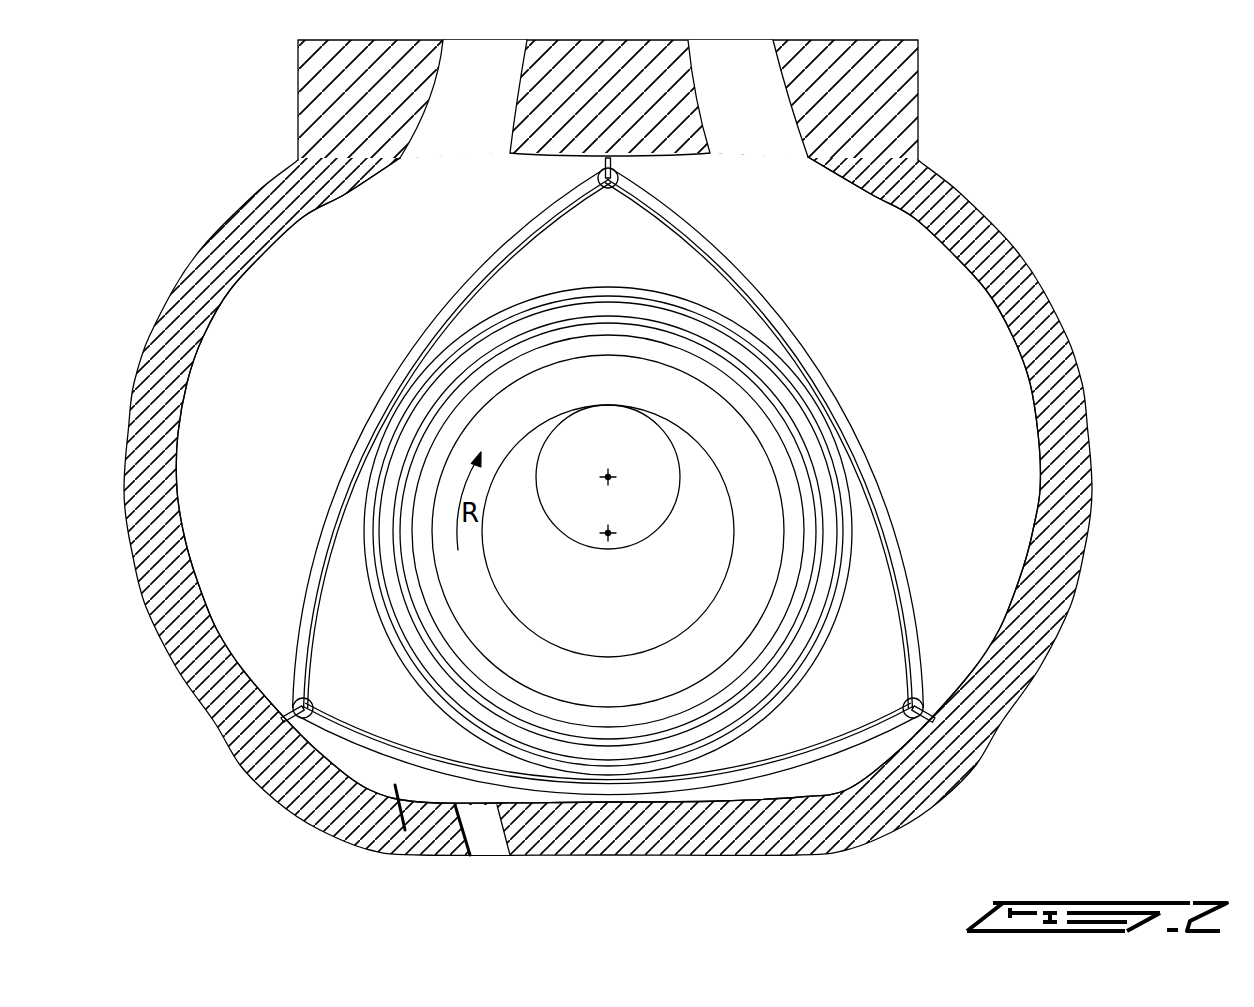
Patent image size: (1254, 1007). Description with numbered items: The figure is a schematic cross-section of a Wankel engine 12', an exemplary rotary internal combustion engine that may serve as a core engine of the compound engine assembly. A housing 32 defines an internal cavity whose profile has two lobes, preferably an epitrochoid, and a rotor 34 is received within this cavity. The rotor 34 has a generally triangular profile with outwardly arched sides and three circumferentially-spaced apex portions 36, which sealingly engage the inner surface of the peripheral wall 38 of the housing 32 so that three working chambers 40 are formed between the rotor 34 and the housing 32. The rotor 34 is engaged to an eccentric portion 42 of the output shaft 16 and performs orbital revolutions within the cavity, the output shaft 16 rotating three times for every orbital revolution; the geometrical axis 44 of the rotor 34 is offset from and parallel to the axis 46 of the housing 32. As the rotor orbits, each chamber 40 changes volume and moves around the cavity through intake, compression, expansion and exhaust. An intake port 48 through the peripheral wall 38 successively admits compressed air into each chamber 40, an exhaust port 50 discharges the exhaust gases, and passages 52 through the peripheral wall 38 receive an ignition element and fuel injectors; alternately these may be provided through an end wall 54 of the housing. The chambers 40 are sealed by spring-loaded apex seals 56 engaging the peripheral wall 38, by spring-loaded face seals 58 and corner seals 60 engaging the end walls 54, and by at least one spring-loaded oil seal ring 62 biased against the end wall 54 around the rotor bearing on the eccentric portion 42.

The Wankel engine 12' is at (143, 129).
The output shaft 16 is at (636, 515).
The housing 32 is at (997, 216).
The rotor 34 is at (895, 503).
The apex portions 36 is at (950, 740).
The peripheral wall 38 is at (1042, 338).
The working chambers 40 is at (268, 386).
The eccentric portion 42 is at (603, 621).
The geometrical axis 44 is at (606, 535).
The axis 46 is at (606, 477).
The intake port 48 is at (750, 120).
The exhaust port 50 is at (470, 120).
The passages 52 is at (482, 838).
The end wall 54 is at (1000, 548).
The apex seals 56 is at (290, 719).
The face seals 58 is at (318, 603).
The corner seals 60 is at (300, 704).
The oil seal ring 62 is at (737, 700).